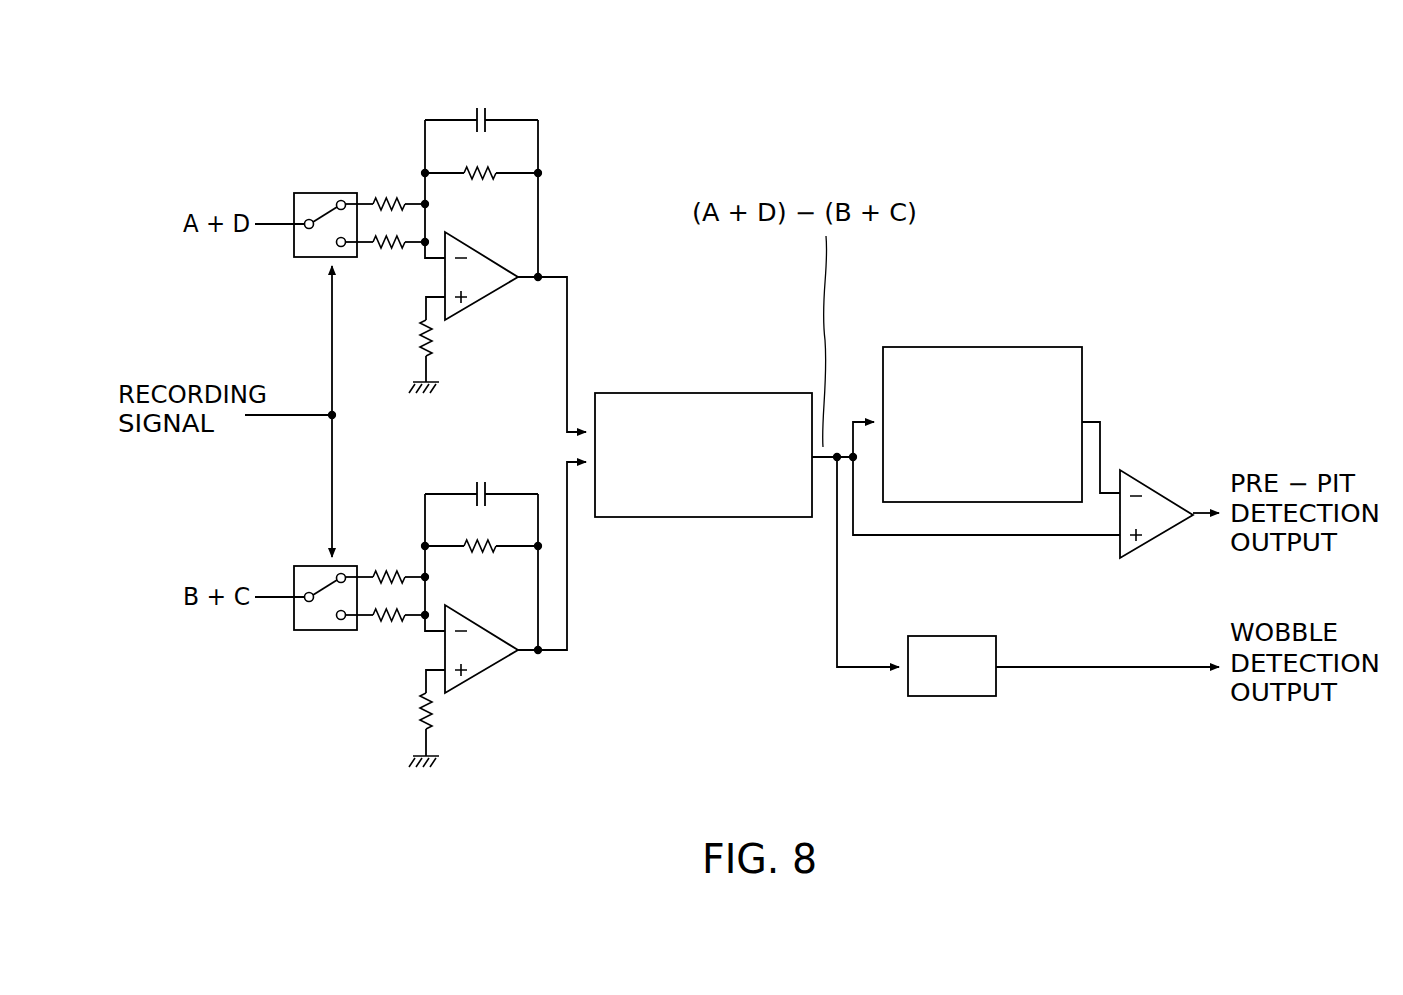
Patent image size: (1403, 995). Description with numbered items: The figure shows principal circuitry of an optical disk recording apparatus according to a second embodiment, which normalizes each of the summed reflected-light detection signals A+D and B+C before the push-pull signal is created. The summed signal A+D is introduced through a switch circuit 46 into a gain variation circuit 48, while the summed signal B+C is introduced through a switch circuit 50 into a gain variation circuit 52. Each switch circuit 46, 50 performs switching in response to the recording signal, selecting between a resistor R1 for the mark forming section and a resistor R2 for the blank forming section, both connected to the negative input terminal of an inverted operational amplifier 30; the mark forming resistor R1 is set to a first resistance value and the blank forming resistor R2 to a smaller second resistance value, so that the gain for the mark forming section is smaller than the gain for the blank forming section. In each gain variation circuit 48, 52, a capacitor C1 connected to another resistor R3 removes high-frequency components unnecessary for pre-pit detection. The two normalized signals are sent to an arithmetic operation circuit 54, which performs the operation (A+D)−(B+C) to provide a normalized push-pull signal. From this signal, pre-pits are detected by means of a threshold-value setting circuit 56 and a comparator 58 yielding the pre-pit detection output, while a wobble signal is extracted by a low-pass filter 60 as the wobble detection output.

The inverted operational amplifier 30 is at (483, 300).
The switch circuit 46 is at (305, 192).
The gain variation circuit 48 is at (548, 110).
The switch circuit 50 is at (305, 565).
The gain variation circuit 52 is at (535, 720).
The arithmetic operation circuit 54 is at (708, 393).
The threshold-value setting circuit 56 is at (985, 347).
The comparator 58 is at (1172, 470).
The low-pass filter 60 is at (953, 697).
The resistor R1 is at (387, 196).
The resistor R2 is at (390, 250).
The resistor R3 is at (480, 180).
The capacitor C1 is at (487, 110).